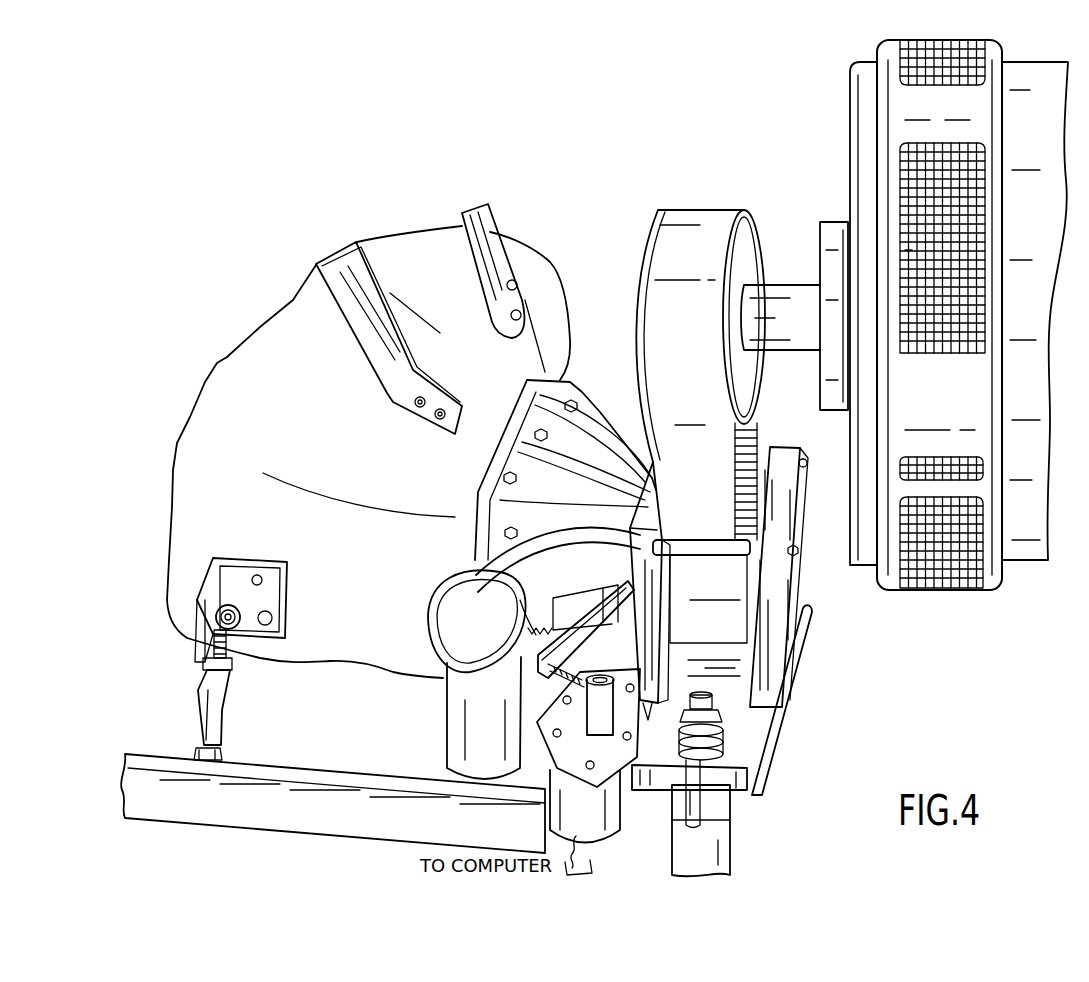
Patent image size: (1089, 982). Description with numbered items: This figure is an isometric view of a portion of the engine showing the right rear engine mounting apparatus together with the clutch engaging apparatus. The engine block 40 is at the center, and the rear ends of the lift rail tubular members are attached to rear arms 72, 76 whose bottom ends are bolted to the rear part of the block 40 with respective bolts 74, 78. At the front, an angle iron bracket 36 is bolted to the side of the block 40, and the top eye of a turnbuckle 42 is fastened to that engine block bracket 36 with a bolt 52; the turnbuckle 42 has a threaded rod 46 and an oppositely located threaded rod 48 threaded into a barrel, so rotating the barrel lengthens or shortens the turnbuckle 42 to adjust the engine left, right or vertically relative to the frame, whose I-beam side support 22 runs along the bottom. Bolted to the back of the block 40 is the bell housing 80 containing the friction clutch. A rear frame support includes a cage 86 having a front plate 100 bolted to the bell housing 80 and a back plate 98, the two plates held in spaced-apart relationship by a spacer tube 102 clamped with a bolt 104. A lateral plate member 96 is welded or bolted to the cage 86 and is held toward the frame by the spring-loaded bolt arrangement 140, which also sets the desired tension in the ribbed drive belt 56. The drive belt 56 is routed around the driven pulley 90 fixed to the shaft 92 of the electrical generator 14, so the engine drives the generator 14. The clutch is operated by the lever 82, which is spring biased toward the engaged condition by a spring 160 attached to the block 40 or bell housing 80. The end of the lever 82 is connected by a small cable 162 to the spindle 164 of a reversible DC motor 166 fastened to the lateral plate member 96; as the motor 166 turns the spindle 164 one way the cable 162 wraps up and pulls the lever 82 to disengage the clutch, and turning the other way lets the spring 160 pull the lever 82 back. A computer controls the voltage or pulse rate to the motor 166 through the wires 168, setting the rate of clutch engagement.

The electrical generator 14 is at (850, 112).
The I-beam side support 22 is at (327, 772).
The angle iron bracket 36 is at (288, 598).
The engine block 40 is at (555, 338).
The turnbuckle 42 is at (228, 712).
The threaded rod 46 is at (235, 665).
The threaded rod 48 is at (220, 756).
The bolt 52 is at (240, 633).
The drive belt 56 is at (698, 210).
The arm 72 is at (360, 345).
The bolt 74 is at (435, 418).
The arm 76 is at (492, 250).
The bolt 78 is at (510, 316).
The bell housing 80 is at (598, 435).
The lever 82 is at (573, 640).
The cage 86 is at (826, 612).
The driven pulley 90 is at (748, 252).
The shaft 92 is at (772, 294).
The lateral plate member 96 is at (750, 737).
The back plate 98 is at (798, 590).
The front plate 100 is at (618, 520).
The spacer tube 102 is at (708, 552).
The bolt 104 is at (808, 468).
The spring-loaded bolt arrangement 140 is at (716, 793).
The spring 160 is at (545, 622).
The cable 162 is at (545, 686).
The spindle 164 is at (593, 718).
The reversible DC motor 166 is at (600, 822).
The wires 168 is at (582, 853).